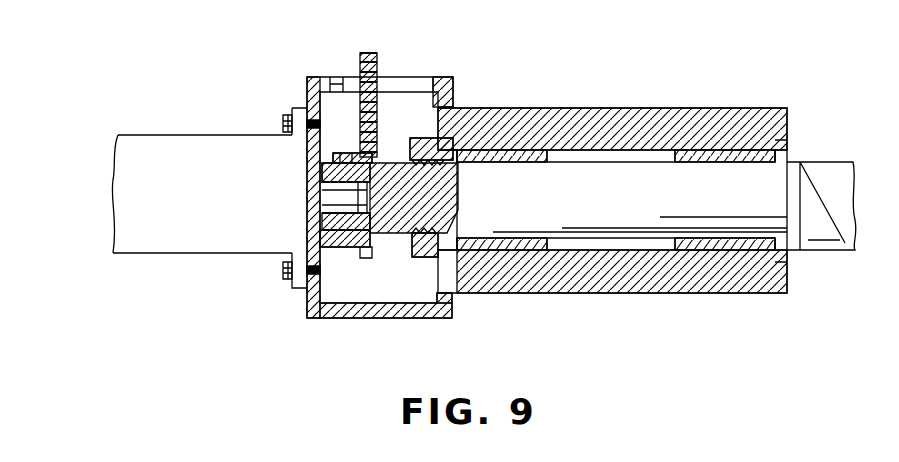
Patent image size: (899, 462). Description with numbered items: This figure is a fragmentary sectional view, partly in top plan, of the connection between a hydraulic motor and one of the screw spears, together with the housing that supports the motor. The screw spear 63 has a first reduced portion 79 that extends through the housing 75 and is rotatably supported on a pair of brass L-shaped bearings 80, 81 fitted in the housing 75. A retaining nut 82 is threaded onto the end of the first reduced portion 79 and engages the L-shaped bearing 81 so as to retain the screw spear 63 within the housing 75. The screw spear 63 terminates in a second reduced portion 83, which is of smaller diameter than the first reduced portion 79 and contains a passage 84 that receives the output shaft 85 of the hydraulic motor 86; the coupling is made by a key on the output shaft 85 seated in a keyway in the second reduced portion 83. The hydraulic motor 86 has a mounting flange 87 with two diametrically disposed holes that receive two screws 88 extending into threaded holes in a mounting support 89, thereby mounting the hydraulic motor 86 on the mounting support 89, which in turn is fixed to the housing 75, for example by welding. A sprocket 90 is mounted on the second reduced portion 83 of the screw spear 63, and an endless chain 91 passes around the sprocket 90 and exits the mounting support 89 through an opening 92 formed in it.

The screw spear 63 is at (816, 162).
The housing 75 is at (600, 98).
The first reduced portion 79 is at (638, 162).
The L-shaped bearing 80 is at (742, 150).
The L-shaped bearing 81 is at (518, 243).
The retaining nut 82 is at (420, 138).
The second reduced portion 83 is at (392, 160).
The passage 84 is at (322, 187).
The output shaft 85 is at (322, 222).
The hydraulic motor 86 is at (198, 134).
The mounting flange 87 is at (292, 110).
The screw 88 is at (283, 277).
The mounting support 89 is at (375, 327).
The sprocket 90 is at (350, 156).
The endless chain 91 is at (370, 53).
The opening 92 is at (343, 86).